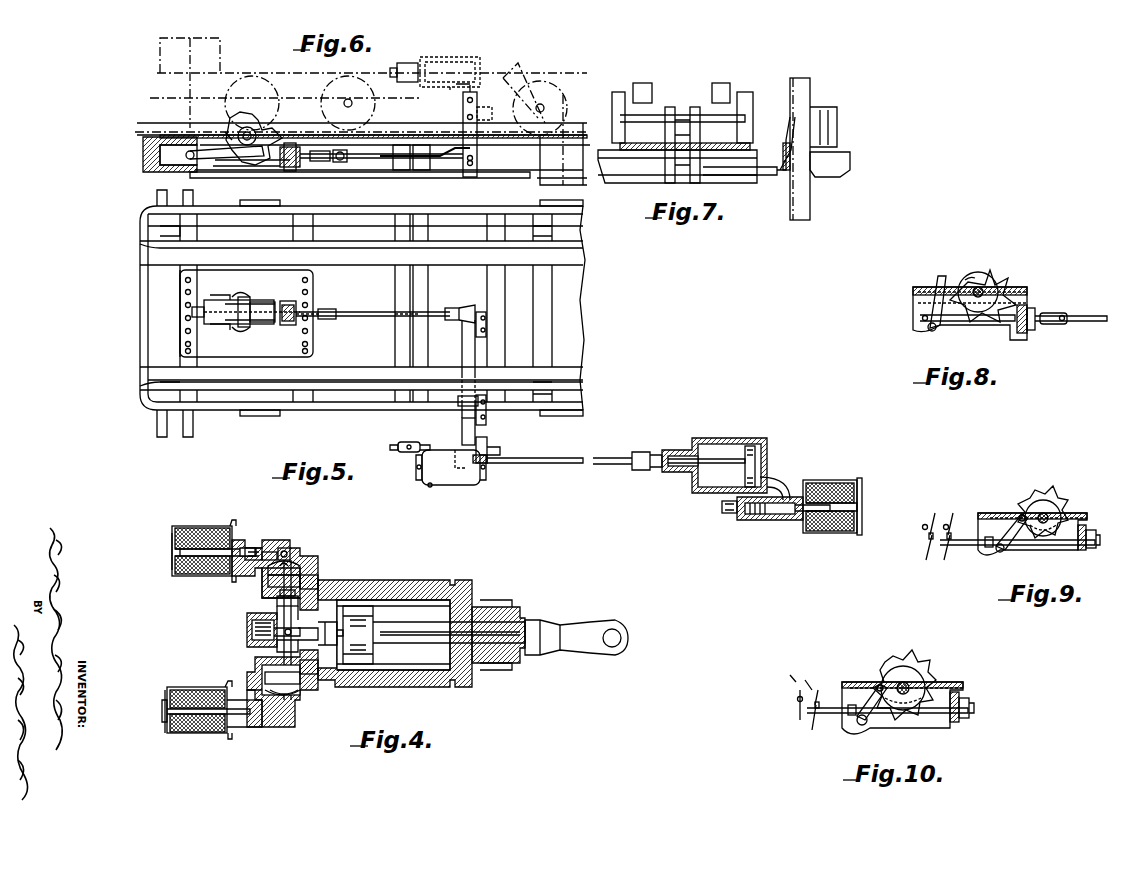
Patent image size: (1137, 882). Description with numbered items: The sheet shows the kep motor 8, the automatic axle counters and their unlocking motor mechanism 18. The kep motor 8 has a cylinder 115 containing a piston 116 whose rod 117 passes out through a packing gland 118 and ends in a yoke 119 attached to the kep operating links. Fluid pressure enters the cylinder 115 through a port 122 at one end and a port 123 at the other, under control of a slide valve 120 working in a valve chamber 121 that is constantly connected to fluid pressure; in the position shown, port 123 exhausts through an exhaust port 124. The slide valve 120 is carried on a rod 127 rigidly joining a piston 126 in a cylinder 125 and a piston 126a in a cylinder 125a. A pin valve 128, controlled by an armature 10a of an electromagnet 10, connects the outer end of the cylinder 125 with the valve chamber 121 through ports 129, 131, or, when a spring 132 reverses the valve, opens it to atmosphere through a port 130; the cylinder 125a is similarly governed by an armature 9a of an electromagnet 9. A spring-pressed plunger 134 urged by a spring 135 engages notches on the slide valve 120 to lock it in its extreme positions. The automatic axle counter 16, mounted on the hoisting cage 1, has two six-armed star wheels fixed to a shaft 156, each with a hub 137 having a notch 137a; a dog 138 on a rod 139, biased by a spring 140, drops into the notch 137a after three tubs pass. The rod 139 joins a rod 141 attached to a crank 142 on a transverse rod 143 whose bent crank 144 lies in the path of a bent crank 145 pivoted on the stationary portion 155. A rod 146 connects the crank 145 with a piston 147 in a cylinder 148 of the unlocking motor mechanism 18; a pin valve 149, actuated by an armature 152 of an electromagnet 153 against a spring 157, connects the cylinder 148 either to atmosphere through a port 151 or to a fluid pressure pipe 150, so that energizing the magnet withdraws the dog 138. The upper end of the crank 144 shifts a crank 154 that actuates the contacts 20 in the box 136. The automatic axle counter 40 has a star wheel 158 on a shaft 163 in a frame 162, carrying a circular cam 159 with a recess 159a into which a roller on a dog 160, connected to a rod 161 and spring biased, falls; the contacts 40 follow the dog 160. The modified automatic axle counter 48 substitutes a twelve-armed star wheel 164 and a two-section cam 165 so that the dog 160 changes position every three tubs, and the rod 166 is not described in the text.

In FIG. 5, the hoisting cage 1 is at (362, 313).
In FIG. 4, the kep motor 8 is at (473, 632).
In FIG. 4, the electromagnet 9 is at (200, 687).
In FIG. 4, the armature 9a is at (165, 690).
In FIG. 4, the electromagnet 10 is at (202, 572).
In FIG. 4, the armature 10a is at (172, 562).
In FIG. 6, the automatic axle counter 16 is at (225, 132).
In FIG. 7, the automatic axle counter 16 is at (692, 107).
In FIG. 5, the automatic axle counter 16 is at (225, 300).
In FIG. 8, the automatic axle counter 16 is at (975, 270).
In FIG. 4, the unlocking motor mechanism 18 is at (748, 489).
In FIG. 5, the contacts 20 is at (452, 497).
In FIG. 9, the automatic axle counter 40 is at (948, 505).
In FIG. 10, the automatic axle counter 48 is at (801, 695).
In FIG. 4, the cylinder 115 is at (430, 672).
In FIG. 4, the piston 116 is at (373, 653).
In FIG. 4, the rod 117 is at (430, 630).
In FIG. 4, the packing gland 118 is at (504, 670).
In FIG. 4, the yoke 119 is at (600, 625).
In FIG. 4, the slide valve 120 is at (277, 610).
In FIG. 4, the valve chamber 121 is at (280, 598).
In FIG. 4, the port 122 is at (392, 590).
In FIG. 4, the port 123 is at (318, 670).
In FIG. 4, the exhaust port 124 is at (277, 645).
In FIG. 4, the cylinder 125 is at (318, 582).
In FIG. 4, the cylinder 125a is at (315, 690).
In FIG. 4, the piston 126 is at (300, 568).
In FIG. 4, the piston 126a is at (300, 708).
In FIG. 4, the rod 127 is at (262, 667).
In FIG. 4, the pin valve 128 is at (262, 540).
In FIG. 4, the port 129 is at (297, 545).
In FIG. 4, the port 130 is at (248, 540).
In FIG. 4, the port 131 is at (262, 575).
In FIG. 4, the spring 132 is at (282, 540).
In FIG. 4, the plunger 134 is at (265, 632).
In FIG. 4, the spring 135 is at (252, 622).
In FIG. 6, the box 136 is at (455, 62).
In FIG. 5, the box 136 is at (451, 482).
In FIG. 6, the hub 137 is at (250, 130).
In FIG. 5, the hub 137 is at (275, 300).
In FIG. 8, the hub 137 is at (985, 276).
In FIG. 8, the notch 137a is at (942, 285).
In FIG. 6, the dog 138 is at (190, 146).
In FIG. 5, the dog 138 is at (200, 316).
In FIG. 8, the dog 138 is at (925, 303).
In FIG. 6, the rod 139 is at (266, 162).
In FIG. 8, the rod 139 is at (988, 322).
In FIG. 6, the spring 140 is at (292, 168).
In FIG. 5, the spring 140 is at (292, 326).
In FIG. 8, the spring 140 is at (1030, 333).
In FIG. 6, the rod 141 is at (378, 160).
In FIG. 5, the rod 141 is at (370, 320).
In FIG. 8, the rod 141 is at (1100, 322).
In FIG. 6, the crank 142 is at (463, 160).
In FIG. 7, the transverse rod 143 is at (745, 176).
In FIG. 5, the transverse rod 143 is at (462, 350).
In FIG. 6, the crank 144 is at (463, 112).
In FIG. 7, the crank 144 is at (785, 140).
In FIG. 5, the crank 144 is at (495, 437).
In FIG. 6, the bent crank 145 is at (485, 122).
In FIG. 7, the bent crank 145 is at (828, 118).
In FIG. 5, the bent crank 145 is at (502, 450).
In FIG. 5, the rod 146 is at (548, 460).
In FIG. 4, the piston 147 is at (750, 446).
In FIG. 4, the cylinder 148 is at (710, 440).
In FIG. 4, the pin valve 149 is at (782, 514).
In FIG. 4, the fluid pressure pipe 150 is at (728, 513).
In FIG. 4, the port 151 is at (795, 520).
In FIG. 4, the armature 152 is at (862, 530).
In FIG. 4, the electromagnet 153 is at (840, 483).
In FIG. 6, the crank 154 is at (440, 90).
In FIG. 5, the crank 154 is at (445, 442).
In FIG. 7, the stationary portion 155 is at (838, 165).
In FIG. 5, the shaft 156 is at (248, 328).
In FIG. 8, the shaft 156 is at (995, 290).
In FIG. 4, the spring 157 is at (752, 514).
In FIG. 9, the star wheel 158 is at (1050, 490).
In FIG. 9, the circular cam 159 is at (1055, 512).
In FIG. 9, the recess 159a is at (1030, 500).
In FIG. 9, the dog 160 is at (998, 512).
In FIG. 10, the dog 160 is at (870, 680).
In FIG. 9, the rod 161 is at (1078, 546).
In FIG. 10, the rod 161 is at (950, 718).
In FIG. 9, the frame 162 is at (1095, 526).
In FIG. 10, the frame 162 is at (962, 690).
In FIG. 9, the shaft 163 is at (1050, 518).
In FIG. 10, the shaft 163 is at (912, 688).
In FIG. 10, the star wheel 164 is at (895, 655).
In FIG. 10, the cam 165 is at (918, 665).
In FIG. 9, the rod 166 is at (1030, 546).
In FIG. 10, the rod 166 is at (900, 714).